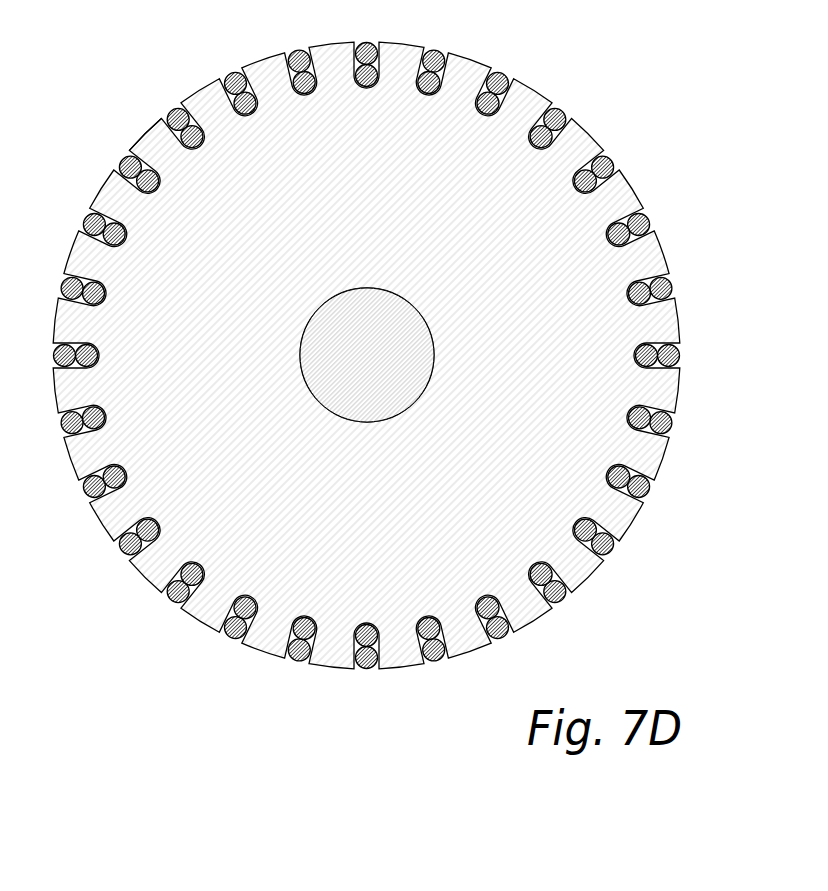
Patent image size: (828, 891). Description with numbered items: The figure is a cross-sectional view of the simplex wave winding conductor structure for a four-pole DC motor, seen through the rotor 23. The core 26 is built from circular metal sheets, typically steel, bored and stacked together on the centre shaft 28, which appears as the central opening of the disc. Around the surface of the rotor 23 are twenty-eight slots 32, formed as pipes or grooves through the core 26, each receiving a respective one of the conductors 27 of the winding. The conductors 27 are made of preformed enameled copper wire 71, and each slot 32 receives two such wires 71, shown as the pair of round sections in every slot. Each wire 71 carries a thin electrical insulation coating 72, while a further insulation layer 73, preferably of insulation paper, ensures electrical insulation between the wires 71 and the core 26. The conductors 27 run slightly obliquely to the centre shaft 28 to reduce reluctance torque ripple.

The rotor 23 is at (136, 86).
The core 26 is at (157, 148).
The conductors 27 is at (267, 107).
The centre shaft 28 is at (355, 373).
The slots 32 is at (250, 105).
The enameled copper wire 71 is at (377, 56).
The electrical insulation coating 72 is at (497, 108).
The insulation layer 73 is at (617, 222).